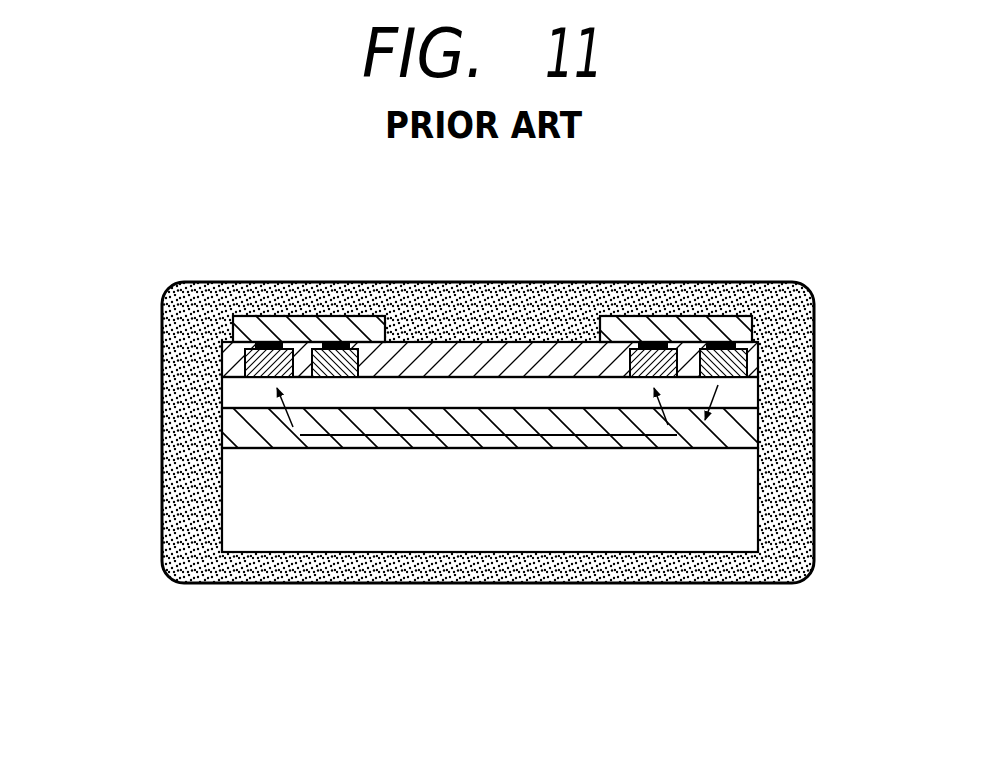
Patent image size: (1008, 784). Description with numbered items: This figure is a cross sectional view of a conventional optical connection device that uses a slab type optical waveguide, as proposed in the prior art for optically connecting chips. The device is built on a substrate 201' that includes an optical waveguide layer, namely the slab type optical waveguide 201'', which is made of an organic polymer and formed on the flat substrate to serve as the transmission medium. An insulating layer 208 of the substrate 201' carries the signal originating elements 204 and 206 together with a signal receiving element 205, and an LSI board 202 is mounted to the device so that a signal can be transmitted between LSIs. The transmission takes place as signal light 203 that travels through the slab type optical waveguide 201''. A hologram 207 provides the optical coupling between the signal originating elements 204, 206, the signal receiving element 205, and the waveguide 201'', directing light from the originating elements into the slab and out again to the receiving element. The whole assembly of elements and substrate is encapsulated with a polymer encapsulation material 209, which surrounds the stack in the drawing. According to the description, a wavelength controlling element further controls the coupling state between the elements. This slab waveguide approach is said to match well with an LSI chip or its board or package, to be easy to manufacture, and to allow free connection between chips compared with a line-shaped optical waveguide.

The substrate 201' is at (411, 512).
The slab type optical waveguide 201'' is at (409, 449).
The LSI board 202 is at (293, 325).
The signal light 203 is at (455, 437).
The signal originating element 204 is at (324, 412).
The signal receiving element 205 is at (653, 338).
The signal originating element 206 is at (755, 350).
The hologram 207 is at (735, 408).
The insulating layer 208 is at (465, 352).
The polymer encapsulation material 209 is at (735, 572).